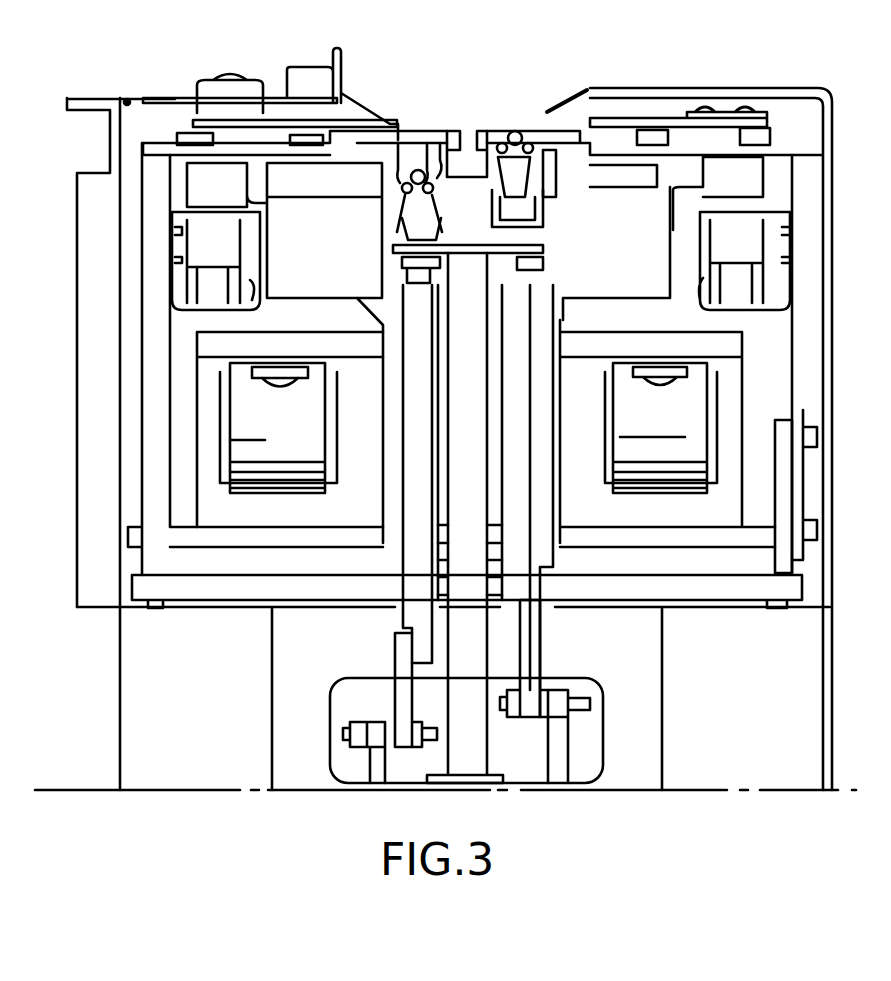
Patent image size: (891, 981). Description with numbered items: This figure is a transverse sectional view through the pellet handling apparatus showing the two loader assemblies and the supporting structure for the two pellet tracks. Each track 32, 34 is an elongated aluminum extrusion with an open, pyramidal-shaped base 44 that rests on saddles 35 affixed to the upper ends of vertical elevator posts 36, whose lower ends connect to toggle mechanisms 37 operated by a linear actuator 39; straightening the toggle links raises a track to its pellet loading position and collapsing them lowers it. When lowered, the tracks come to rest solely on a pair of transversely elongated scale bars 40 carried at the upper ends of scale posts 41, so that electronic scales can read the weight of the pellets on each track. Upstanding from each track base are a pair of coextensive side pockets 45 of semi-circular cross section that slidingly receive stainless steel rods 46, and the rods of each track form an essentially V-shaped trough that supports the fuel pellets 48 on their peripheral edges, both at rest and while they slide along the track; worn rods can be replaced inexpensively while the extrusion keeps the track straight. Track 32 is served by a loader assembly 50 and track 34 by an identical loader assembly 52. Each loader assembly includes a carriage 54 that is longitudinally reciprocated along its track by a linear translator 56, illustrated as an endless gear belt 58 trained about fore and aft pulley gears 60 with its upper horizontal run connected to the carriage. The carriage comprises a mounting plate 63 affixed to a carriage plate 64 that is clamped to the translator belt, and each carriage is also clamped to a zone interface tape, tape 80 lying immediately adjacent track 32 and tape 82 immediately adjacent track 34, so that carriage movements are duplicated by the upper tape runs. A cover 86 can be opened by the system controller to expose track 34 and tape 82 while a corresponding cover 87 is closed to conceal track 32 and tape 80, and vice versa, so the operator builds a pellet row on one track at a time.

The track 32 is at (410, 157).
The track 34 is at (527, 117).
The saddles 35 is at (393, 280).
The vertical elevator posts 36 is at (410, 490).
The toggle mechanisms 37 is at (600, 727).
The linear actuator 39 is at (327, 748).
The scale bars 40 is at (563, 247).
The scale posts 41 is at (473, 632).
The pyramidal-shaped base 44 is at (400, 216).
The side pockets 45 is at (397, 130).
The stainless steel rods 46 is at (427, 183).
The fuel pellets 48 is at (427, 143).
The loader assembly 50 is at (160, 290).
The loader assembly 52 is at (770, 268).
The carriage 54 is at (257, 243).
The linear translator 56 is at (210, 440).
The endless gear belt 58 is at (220, 413).
The pulley gears 60 is at (217, 470).
The mounting plate 63 is at (657, 303).
The carriage plate 64 is at (298, 347).
The zone interface tape 80 is at (462, 130).
The zone interface tape 82 is at (487, 187).
The cover 86 is at (657, 113).
The cover 87 is at (277, 123).